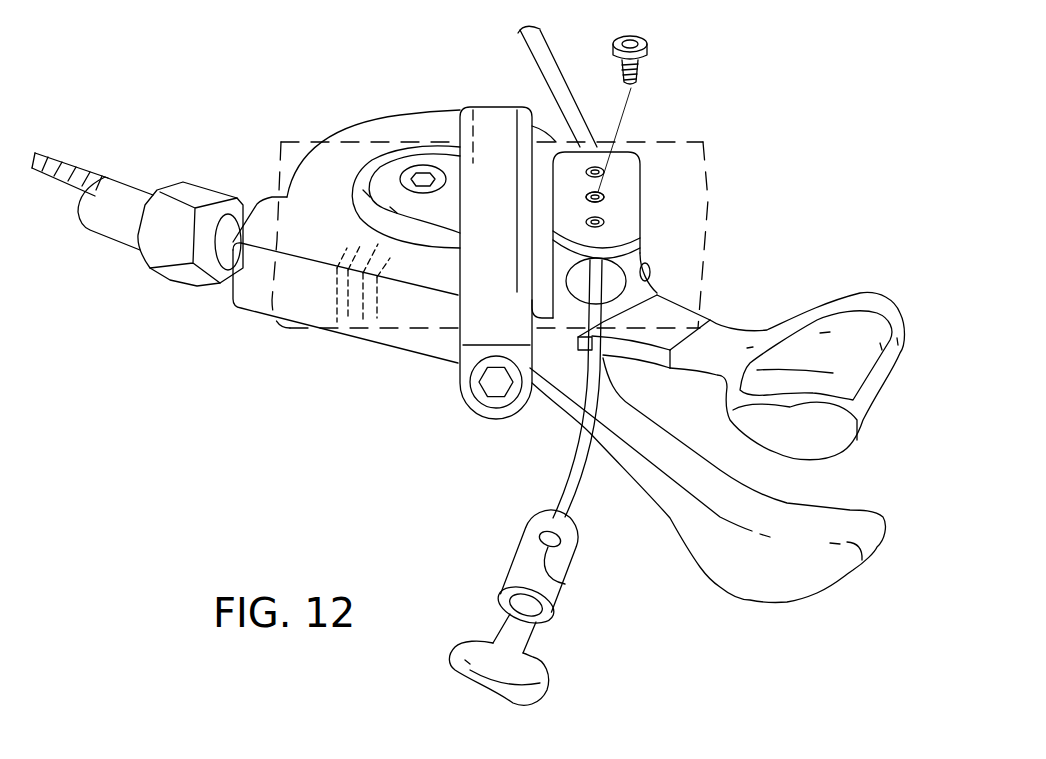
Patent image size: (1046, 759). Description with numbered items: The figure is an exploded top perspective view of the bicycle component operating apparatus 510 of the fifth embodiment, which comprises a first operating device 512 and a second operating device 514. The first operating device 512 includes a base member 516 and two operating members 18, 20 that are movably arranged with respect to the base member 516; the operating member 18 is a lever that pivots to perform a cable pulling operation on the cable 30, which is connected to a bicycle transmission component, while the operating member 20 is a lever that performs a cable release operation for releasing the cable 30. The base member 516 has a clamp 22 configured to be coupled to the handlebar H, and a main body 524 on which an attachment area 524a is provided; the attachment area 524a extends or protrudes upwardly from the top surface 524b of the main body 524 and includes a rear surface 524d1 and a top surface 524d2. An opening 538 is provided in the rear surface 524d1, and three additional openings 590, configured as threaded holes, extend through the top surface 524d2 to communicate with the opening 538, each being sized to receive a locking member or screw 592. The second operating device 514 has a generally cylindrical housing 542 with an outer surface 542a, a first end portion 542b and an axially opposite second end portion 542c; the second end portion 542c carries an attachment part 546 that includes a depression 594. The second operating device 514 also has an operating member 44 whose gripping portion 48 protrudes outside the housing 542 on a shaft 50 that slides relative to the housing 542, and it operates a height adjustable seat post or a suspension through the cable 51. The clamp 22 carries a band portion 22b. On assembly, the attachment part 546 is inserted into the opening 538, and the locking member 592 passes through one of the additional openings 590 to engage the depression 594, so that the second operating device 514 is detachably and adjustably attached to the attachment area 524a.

The bicycle component operating apparatus 510 is at (793, 140).
The handlebar H is at (297, 142).
The cable 30 is at (58, 162).
The first operating device 512 is at (317, 118).
The base member 516 is at (435, 128).
The main body 524 is at (375, 344).
The clamp 22 is at (456, 378).
The band portion 22b is at (492, 303).
The top surface 524b is at (442, 102).
The attachment area 524a is at (645, 240).
The rear surface 524d1 is at (626, 279).
The top surface 524d2 is at (627, 167).
The additional openings 590 is at (585, 221).
The opening 538 is at (578, 290).
The locking member 592 is at (647, 33).
The cable 51 is at (560, 68).
The shaft 50 is at (537, 641).
The operating member 18 is at (817, 593).
The operating member 20 is at (838, 298).
The second operating device 514 is at (563, 610).
The housing 542 is at (573, 553).
The outer surface 542a is at (508, 568).
The first end portion 542b is at (498, 609).
The second end portion 542c is at (573, 528).
The attachment part 546 is at (530, 533).
The depression 594 is at (567, 583).
The operating member 44 is at (467, 690).
The gripping portion 48 is at (518, 712).